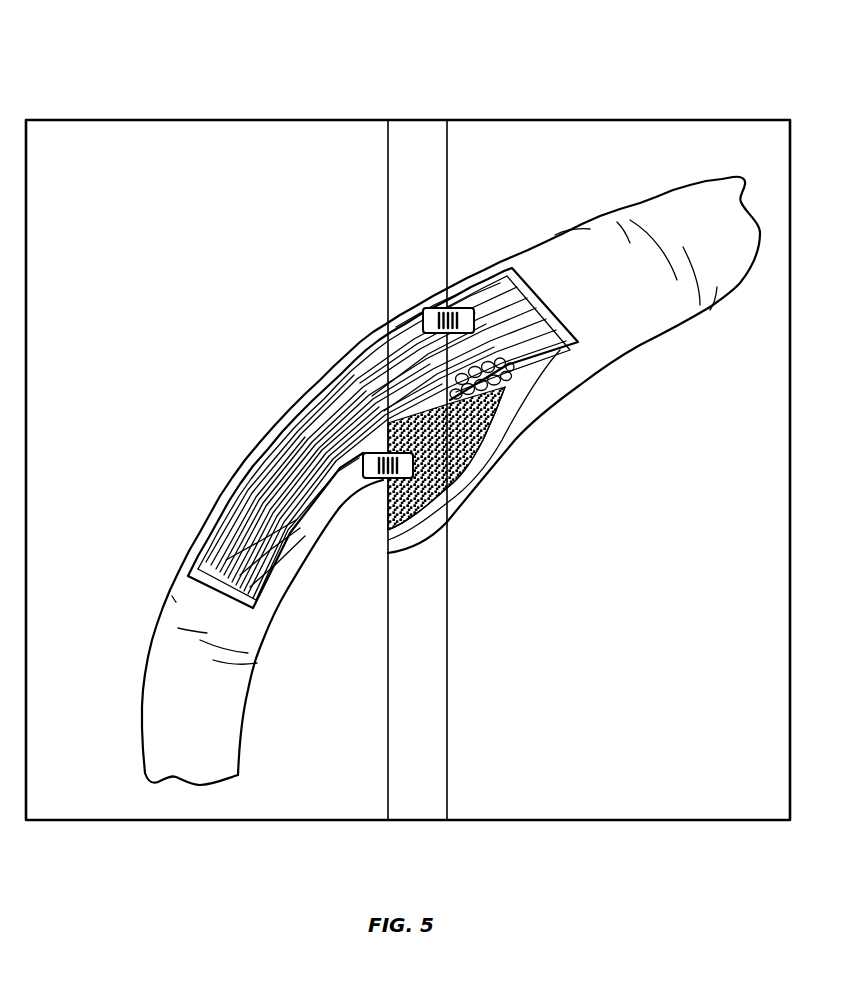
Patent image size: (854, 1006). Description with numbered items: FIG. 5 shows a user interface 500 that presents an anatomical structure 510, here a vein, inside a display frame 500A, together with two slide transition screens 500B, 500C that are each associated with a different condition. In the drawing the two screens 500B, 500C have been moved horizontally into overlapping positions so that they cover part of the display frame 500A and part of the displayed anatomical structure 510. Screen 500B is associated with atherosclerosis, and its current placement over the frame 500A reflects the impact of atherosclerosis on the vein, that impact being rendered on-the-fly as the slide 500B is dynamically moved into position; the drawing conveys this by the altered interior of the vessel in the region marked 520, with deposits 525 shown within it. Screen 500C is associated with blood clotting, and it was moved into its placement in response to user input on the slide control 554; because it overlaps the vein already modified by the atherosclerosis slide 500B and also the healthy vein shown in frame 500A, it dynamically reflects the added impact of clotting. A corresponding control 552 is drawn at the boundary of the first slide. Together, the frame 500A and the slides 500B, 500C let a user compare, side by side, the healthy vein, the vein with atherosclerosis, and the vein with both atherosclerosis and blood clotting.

The interface 500 is at (183, 82).
The display frame 500A is at (82, 147).
The slide transition screen 500B is at (442, 147).
The slide transition screen 500C is at (501, 147).
The anatomical structure 510 is at (621, 183).
The plaque / occlusion 520 is at (420, 487).
The calcified deposits 525 is at (513, 378).
The first marker clip 552 is at (364, 480).
The slide control 554 is at (424, 318).